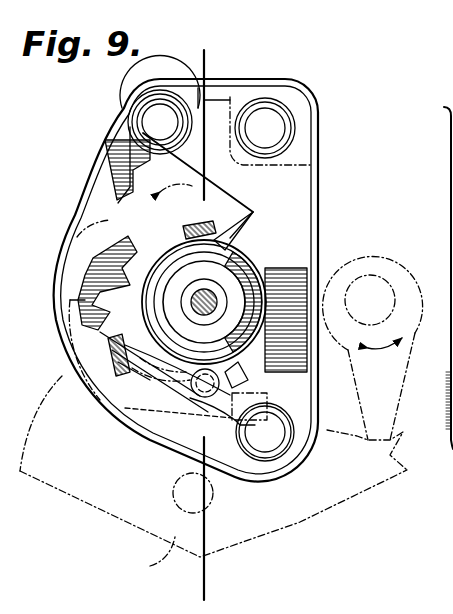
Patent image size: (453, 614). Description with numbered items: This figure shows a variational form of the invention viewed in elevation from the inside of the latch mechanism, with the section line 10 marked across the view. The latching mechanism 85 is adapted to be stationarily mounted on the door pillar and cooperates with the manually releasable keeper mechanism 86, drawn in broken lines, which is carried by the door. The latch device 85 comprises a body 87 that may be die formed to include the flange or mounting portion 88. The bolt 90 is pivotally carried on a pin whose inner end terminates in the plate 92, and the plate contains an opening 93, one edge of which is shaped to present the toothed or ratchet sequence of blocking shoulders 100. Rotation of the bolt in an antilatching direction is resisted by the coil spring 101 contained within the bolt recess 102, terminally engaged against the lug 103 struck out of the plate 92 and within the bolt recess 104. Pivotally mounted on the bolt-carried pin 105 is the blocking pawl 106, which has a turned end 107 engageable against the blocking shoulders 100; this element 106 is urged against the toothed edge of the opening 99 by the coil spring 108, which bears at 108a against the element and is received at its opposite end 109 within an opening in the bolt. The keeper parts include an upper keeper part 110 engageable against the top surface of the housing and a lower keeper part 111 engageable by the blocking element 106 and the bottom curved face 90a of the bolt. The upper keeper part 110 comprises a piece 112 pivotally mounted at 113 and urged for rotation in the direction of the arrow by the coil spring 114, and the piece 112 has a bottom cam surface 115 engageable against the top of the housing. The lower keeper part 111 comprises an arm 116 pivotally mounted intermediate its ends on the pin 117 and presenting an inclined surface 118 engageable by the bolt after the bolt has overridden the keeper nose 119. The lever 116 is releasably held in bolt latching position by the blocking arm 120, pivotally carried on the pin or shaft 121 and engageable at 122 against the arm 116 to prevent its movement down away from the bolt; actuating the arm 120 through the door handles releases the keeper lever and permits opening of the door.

The section line 10- 10 is at (182, 60).
The latching mechanism 85 is at (334, 170).
The keeper mechanism 86 is at (402, 258).
The body 87 is at (305, 100).
The flange or mounting portion 88 is at (222, 108).
The bolt 90 is at (105, 283).
The bottom curved face of the bolt 90a is at (142, 430).
The plate 92 is at (300, 232).
The opening 93 is at (258, 241).
The opening 99 is at (102, 292).
The blocking shoulders 100 is at (110, 333).
The coil spring 101 is at (260, 280).
The bolt recess 102 is at (254, 213).
The lug 103 is at (214, 222).
The bolt recess 104 is at (121, 398).
The bolt-carried pin 105 is at (224, 390).
The blocking pawl 106 is at (170, 450).
The turned end 107 is at (114, 357).
The coil spring 108 is at (120, 383).
The spring bearing point 108a is at (113, 370).
The opposite end of coil spring 109 is at (240, 372).
The upper keeper part 110 is at (115, 205).
The lower keeper part 111 is at (262, 522).
The piece 112 is at (246, 196).
The pivot 113 is at (147, 127).
The coil spring 114 is at (165, 100).
The bottom cam surface 115 is at (129, 218).
The arm 116 is at (148, 558).
The pin 117 is at (178, 507).
The inclined surface 118 is at (152, 440).
The keeper nose 119 is at (60, 378).
The blocking arm 120 is at (383, 350).
The pin or shaft 121 is at (373, 278).
The engagement point 122 is at (352, 440).